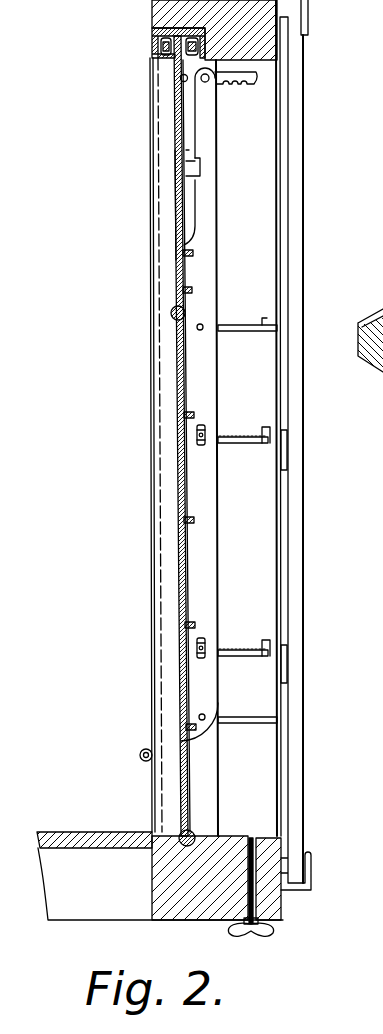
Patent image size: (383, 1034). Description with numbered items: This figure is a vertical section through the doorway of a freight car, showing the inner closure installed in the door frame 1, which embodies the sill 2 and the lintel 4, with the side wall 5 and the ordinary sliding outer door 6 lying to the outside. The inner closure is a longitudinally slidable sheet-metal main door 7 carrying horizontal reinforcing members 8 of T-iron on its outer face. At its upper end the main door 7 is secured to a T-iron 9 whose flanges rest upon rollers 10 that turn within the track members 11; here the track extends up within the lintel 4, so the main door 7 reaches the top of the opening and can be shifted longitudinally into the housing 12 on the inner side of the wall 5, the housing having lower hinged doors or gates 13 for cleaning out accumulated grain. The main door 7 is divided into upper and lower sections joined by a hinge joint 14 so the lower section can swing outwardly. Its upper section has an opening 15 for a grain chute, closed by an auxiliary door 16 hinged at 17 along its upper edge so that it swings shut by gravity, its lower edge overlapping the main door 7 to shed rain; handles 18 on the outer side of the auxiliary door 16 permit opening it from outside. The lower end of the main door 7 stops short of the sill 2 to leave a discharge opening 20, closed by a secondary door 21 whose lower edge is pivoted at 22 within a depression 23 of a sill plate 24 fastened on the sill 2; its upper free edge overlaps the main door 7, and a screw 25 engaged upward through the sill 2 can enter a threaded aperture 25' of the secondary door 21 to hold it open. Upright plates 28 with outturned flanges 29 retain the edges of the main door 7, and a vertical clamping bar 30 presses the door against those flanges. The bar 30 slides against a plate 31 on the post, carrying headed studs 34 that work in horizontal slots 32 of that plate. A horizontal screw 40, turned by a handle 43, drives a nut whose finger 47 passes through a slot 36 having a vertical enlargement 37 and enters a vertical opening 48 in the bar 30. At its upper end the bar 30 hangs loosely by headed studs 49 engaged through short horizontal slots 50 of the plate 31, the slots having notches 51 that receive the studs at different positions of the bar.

The door frame 1 is at (286, 920).
The sill 2 is at (184, 906).
The lintel 4 is at (270, 52).
The side wall 5 is at (318, 327).
The sliding outer door 6 is at (300, 546).
The main door 7 is at (178, 470).
The horizontal reinforcing members 8 is at (182, 414).
The T-iron 9 is at (176, 34).
The rollers 10 is at (188, 48).
The track members 11 is at (160, 38).
The housing 12 is at (150, 345).
The hinged doors or gates 13 is at (140, 761).
The hinge joint 14 is at (172, 313).
The opening 15 is at (176, 276).
The auxiliary door 16 is at (174, 208).
The hinge 17 is at (182, 81).
The handles 18 is at (200, 167).
The discharge opening 20 is at (178, 758).
The secondary door 21 is at (192, 812).
The pivot 22 is at (197, 832).
The depression 23 is at (160, 850).
The sill plate 24 is at (240, 834).
The screws 25 is at (266, 899).
The threaded aperture 25' is at (219, 762).
The upright plates 28 is at (152, 388).
The outturned flanges 29 is at (166, 362).
The vertical clamping bars 30 is at (210, 300).
The plates 31 is at (275, 232).
The horizontal slots 32 is at (262, 320).
The headed studs 34 is at (204, 325).
The horizontal slots 36 is at (242, 648).
The vertical enlargements 37 is at (266, 642).
The horizontal screws 40 is at (262, 428).
The handles 43 is at (288, 666).
The finger 47 is at (205, 445).
The vertical opening 48 is at (206, 433).
The headed rivets or studs 49 is at (210, 86).
The short horizontal slots 50 is at (255, 72).
The notches 51 is at (250, 85).